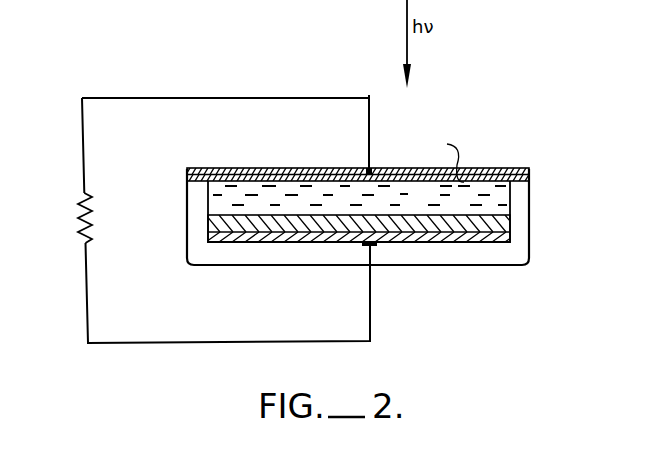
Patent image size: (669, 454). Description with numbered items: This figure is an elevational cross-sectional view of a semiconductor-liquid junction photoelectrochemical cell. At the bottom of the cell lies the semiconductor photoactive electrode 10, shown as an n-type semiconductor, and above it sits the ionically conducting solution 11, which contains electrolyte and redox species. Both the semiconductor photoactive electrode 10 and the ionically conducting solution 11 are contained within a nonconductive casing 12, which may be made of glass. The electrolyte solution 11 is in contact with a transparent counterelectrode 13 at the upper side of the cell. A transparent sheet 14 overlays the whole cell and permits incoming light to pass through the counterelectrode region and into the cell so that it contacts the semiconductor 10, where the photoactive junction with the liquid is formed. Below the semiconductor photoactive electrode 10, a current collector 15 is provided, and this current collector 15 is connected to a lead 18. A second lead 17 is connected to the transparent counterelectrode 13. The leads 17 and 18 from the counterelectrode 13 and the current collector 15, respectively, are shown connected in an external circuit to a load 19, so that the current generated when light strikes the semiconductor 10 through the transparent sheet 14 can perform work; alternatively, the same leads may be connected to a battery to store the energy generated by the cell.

The semiconductor photoactive electrode 10 is at (378, 220).
The ionically conducting solution 11 is at (430, 203).
The nonconductive casing 12 is at (529, 243).
The transparent counterelectrode 13 is at (444, 160).
The transparent sheet 14 is at (268, 168).
The current collector 15 is at (447, 243).
The lead 17 is at (369, 136).
The lead 18 is at (370, 313).
The load 19 is at (78, 218).